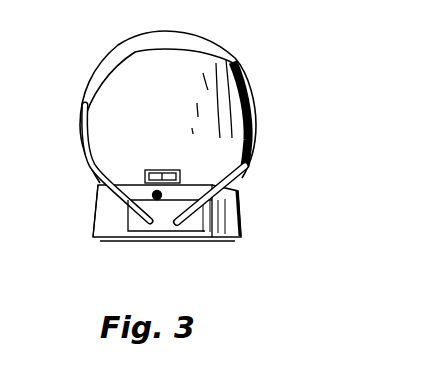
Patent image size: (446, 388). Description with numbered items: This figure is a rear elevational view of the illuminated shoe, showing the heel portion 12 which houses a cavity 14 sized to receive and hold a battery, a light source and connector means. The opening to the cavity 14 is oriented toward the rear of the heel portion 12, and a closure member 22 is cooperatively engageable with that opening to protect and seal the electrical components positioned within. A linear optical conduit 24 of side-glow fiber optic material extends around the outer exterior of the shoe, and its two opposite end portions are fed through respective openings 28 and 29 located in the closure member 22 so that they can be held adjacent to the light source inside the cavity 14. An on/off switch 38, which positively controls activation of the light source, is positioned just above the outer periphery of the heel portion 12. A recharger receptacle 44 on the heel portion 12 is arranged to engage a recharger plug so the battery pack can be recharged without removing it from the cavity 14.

The heel portion 12 is at (240, 214).
The cavity 14 is at (247, 238).
The closure member 22 is at (133, 220).
The linear optical conduit 24 is at (79, 128).
The opening 28 is at (162, 242).
The opening 29 is at (182, 238).
The on/off switch 38 is at (158, 165).
The recharger receptacle 44 is at (152, 195).